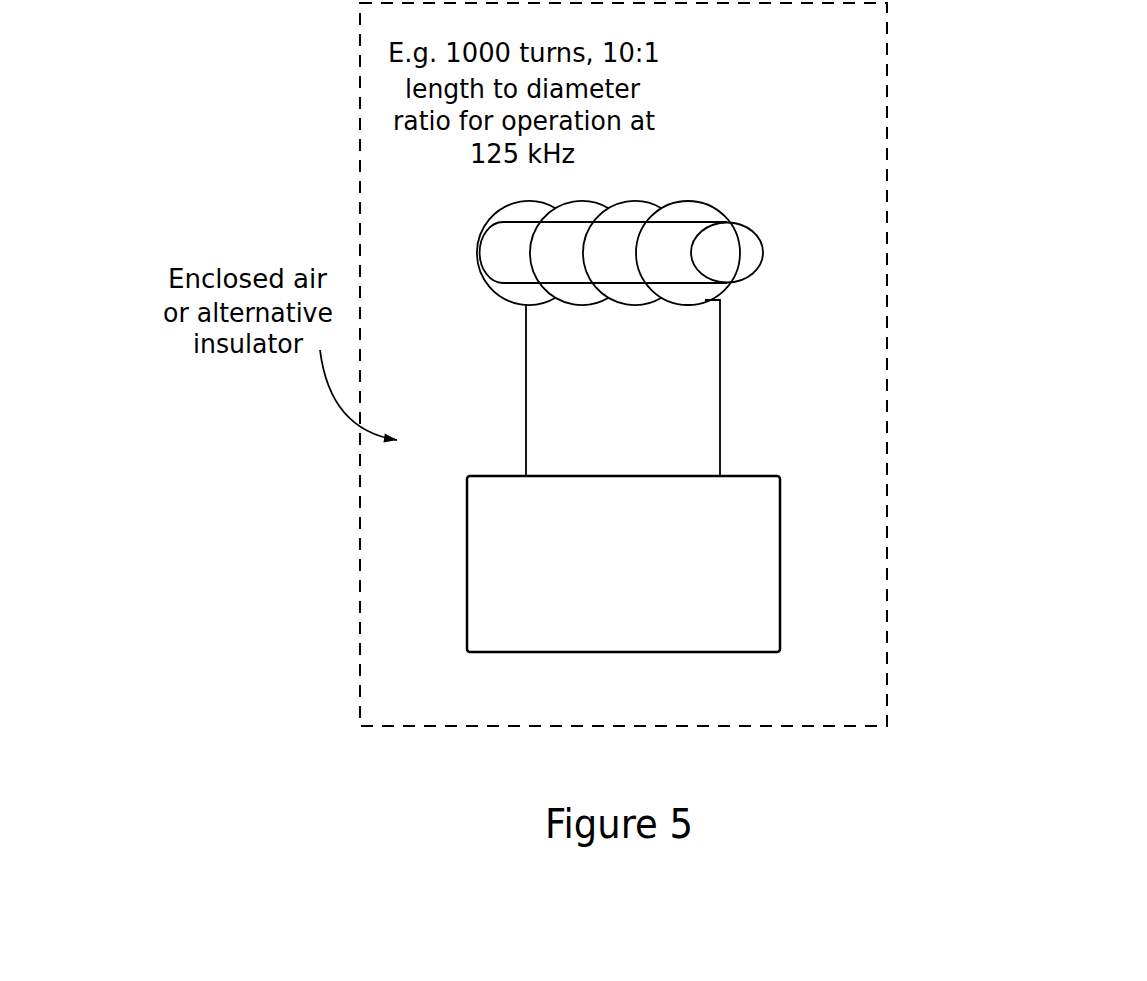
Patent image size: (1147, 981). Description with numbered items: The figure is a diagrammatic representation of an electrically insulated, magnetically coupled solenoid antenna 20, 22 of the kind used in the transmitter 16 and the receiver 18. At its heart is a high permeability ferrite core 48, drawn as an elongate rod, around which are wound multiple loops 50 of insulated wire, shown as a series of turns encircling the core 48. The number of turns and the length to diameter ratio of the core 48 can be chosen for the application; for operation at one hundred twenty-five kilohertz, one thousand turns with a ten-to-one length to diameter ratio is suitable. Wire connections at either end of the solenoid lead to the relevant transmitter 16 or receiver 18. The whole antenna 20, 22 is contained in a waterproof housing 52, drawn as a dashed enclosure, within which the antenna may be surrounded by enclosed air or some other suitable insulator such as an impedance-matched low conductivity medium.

The transmitter 16 is at (804, 476).
The receiver 18 is at (783, 553).
The magnetically coupled antenna 20 is at (799, 300).
The magnetically coupled antenna 22 is at (667, 313).
The high permeability ferrite core 48 is at (767, 258).
The loops of insulated wire 50 is at (667, 217).
The waterproof housing 52 is at (357, 702).